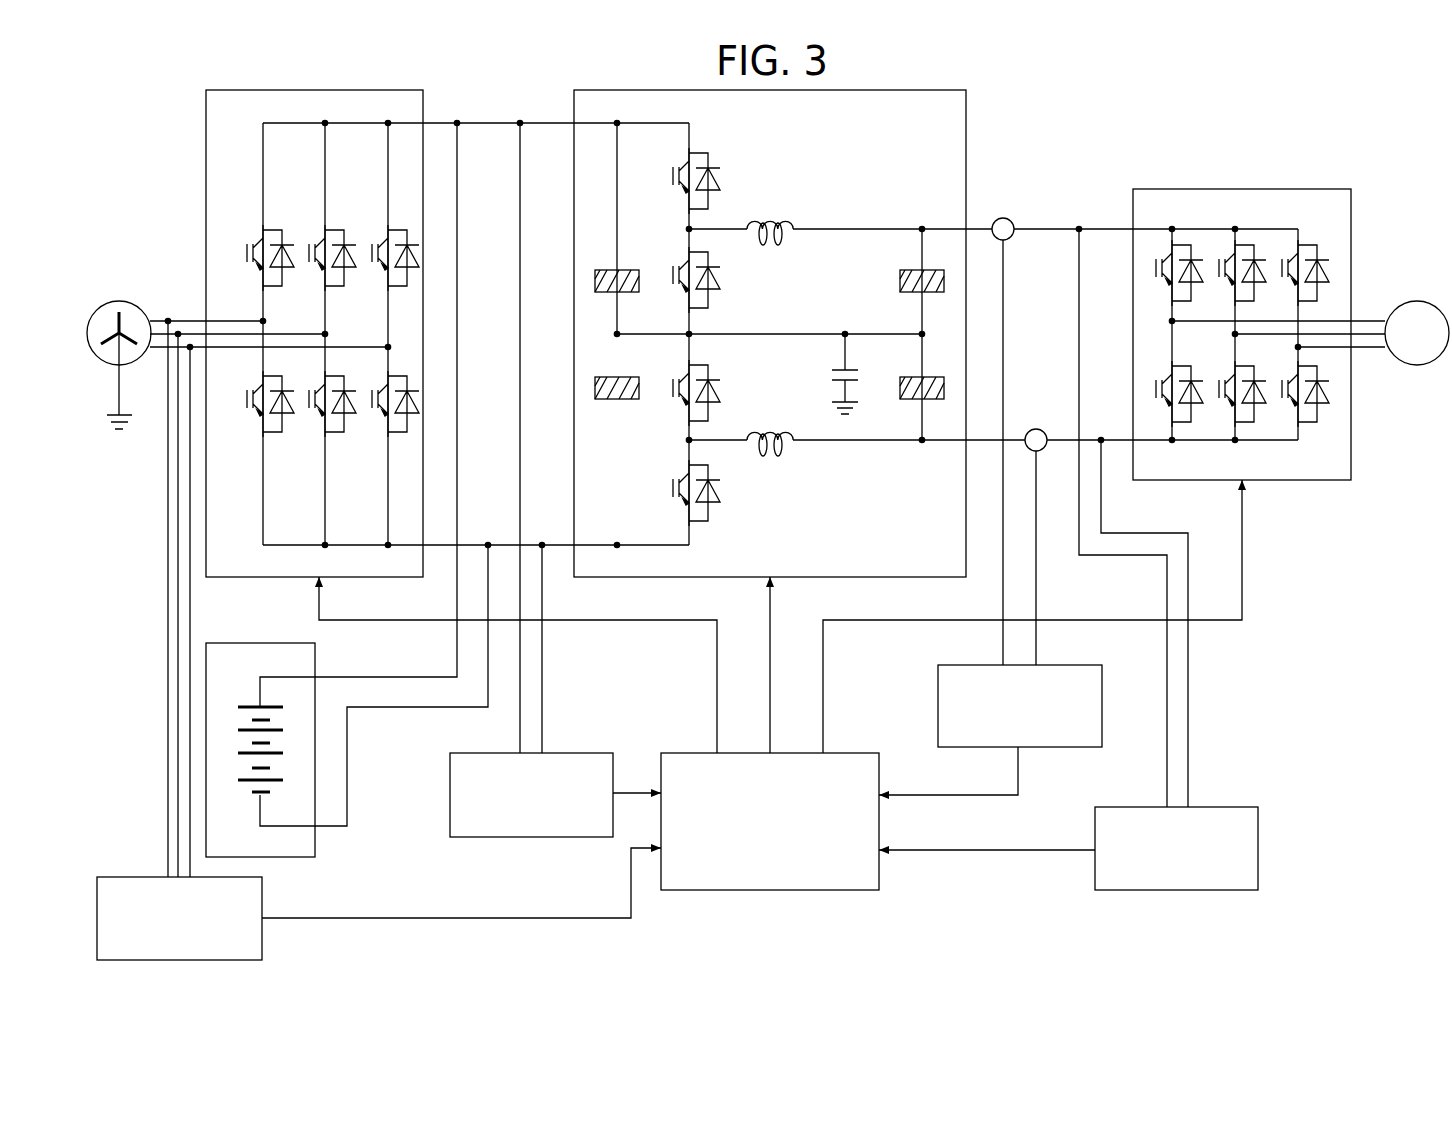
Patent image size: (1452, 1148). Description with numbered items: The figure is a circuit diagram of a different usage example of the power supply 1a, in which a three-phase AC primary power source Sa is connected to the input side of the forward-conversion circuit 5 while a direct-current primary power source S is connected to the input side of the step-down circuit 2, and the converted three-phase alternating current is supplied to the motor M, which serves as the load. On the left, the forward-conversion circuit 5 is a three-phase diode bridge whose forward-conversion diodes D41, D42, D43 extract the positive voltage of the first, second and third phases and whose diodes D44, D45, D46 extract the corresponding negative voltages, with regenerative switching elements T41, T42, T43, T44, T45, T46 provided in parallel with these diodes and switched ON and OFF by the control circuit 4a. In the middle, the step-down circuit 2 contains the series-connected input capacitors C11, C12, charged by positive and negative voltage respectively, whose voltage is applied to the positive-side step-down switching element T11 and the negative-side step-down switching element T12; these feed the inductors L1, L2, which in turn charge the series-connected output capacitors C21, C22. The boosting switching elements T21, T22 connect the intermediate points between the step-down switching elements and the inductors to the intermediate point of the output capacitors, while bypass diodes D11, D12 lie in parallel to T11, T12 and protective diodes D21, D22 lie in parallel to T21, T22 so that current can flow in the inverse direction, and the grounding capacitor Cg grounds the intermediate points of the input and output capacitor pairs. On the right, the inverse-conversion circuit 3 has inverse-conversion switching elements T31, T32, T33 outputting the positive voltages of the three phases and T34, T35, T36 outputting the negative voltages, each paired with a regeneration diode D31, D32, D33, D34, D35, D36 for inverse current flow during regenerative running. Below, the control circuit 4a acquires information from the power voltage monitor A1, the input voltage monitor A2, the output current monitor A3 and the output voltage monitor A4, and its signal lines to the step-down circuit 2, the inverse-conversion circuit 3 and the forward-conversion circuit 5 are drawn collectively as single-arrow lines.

The power supply 1a is at (1410, 160).
The step-down circuit 2 is at (982, 126).
The inverse-conversion circuit 3 is at (1123, 203).
The control circuit 4a is at (679, 752).
The forward-conversion circuit 5 is at (198, 144).
The primary power source S is at (315, 843).
The primary power source Sa is at (116, 300).
The motor M is at (1417, 301).
The power voltage monitor A1 is at (483, 838).
The input voltage monitor A2 is at (1058, 748).
The output current monitor A3 is at (1234, 806).
The output voltage monitor A4 is at (126, 876).
The step-down switching element T11 is at (672, 178).
The step-down switching element T12 is at (672, 495).
The boosting switching element T21 is at (672, 282).
The boosting switching element T22 is at (672, 390).
The bypass diode D11 is at (711, 178).
The bypass diode D12 is at (711, 493).
The protective diode D21 is at (711, 280).
The protective diode D22 is at (711, 390).
The input capacitor C11 is at (624, 270).
The input capacitor C12 is at (625, 400).
The output capacitor C21 is at (910, 272).
The output capacitor C22 is at (910, 380).
The grounding capacitor Cg is at (830, 375).
The inductor L1 is at (778, 220).
The inductor L2 is at (778, 450).
The inverse-conversion switching element T31 is at (1155, 262).
The inverse-conversion switching element T32 is at (1218, 262).
The inverse-conversion switching element T33 is at (1282, 262).
The inverse-conversion switching element T34 is at (1155, 405).
The inverse-conversion switching element T35 is at (1220, 405).
The inverse-conversion switching element T36 is at (1282, 405).
The regeneration diode D31 is at (1195, 260).
The regeneration diode D32 is at (1260, 260).
The regeneration diode D33 is at (1322, 260).
The regeneration diode D34 is at (1196, 405).
The regeneration diode D35 is at (1259, 405).
The regeneration diode D36 is at (1322, 405).
The regenerative switching element T41 is at (247, 253).
The regenerative switching element T42 is at (309, 253).
The regenerative switching element T43 is at (372, 253).
The regenerative switching element T44 is at (247, 399).
The regenerative switching element T45 is at (309, 399).
The regenerative switching element T46 is at (372, 399).
The forward-conversion diode D41 is at (274, 270).
The forward-conversion diode D42 is at (336, 270).
The forward-conversion diode D43 is at (407, 270).
The forward-conversion diode D44 is at (274, 416).
The forward-conversion diode D45 is at (336, 416).
The forward-conversion diode D46 is at (407, 416).